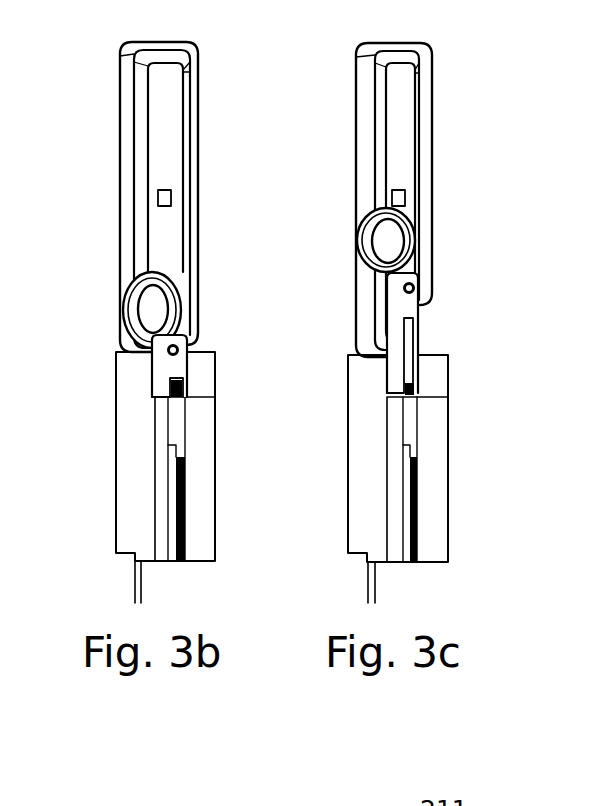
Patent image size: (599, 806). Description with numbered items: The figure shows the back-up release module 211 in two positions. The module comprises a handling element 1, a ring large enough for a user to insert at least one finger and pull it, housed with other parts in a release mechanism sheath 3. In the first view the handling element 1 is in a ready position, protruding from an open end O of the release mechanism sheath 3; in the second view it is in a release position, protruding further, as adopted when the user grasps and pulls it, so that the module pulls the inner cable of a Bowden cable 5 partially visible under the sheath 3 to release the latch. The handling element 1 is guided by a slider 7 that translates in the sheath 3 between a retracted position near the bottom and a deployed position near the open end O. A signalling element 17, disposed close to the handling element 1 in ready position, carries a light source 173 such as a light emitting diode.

In FIG. 3B, the back-up release module 211 is at (216, 66).
In FIG. 3C, the back-up release module 211 is at (467, 66).
In FIG. 3B, the signalling element 17 is at (120, 168).
In FIG. 3C, the signalling element 17 is at (357, 113).
In FIG. 3B, the light source 173 is at (167, 190).
In FIG. 3C, the light source 173 is at (400, 190).
In FIG. 3B, the handling element 1 is at (133, 277).
In FIG. 3C, the handling element 1 is at (362, 222).
In FIG. 3B, the release mechanism sheath 3 is at (116, 425).
In FIG. 3C, the release mechanism sheath 3 is at (348, 425).
In FIG. 3B, the slider 7 is at (187, 372).
In FIG. 3C, the slider 7 is at (410, 310).
In FIG. 3B, the Bowden cable 5 is at (135, 572).
In FIG. 3C, the Bowden cable 5 is at (368, 572).
In FIG. 3B, the open end O is at (113, 348).
In FIG. 3C, the open end O is at (345, 349).